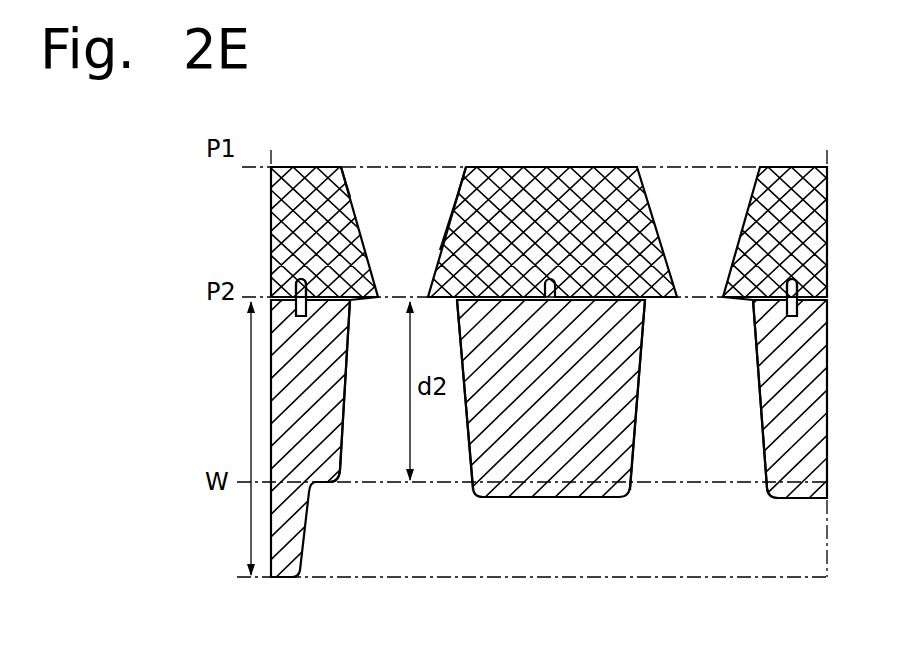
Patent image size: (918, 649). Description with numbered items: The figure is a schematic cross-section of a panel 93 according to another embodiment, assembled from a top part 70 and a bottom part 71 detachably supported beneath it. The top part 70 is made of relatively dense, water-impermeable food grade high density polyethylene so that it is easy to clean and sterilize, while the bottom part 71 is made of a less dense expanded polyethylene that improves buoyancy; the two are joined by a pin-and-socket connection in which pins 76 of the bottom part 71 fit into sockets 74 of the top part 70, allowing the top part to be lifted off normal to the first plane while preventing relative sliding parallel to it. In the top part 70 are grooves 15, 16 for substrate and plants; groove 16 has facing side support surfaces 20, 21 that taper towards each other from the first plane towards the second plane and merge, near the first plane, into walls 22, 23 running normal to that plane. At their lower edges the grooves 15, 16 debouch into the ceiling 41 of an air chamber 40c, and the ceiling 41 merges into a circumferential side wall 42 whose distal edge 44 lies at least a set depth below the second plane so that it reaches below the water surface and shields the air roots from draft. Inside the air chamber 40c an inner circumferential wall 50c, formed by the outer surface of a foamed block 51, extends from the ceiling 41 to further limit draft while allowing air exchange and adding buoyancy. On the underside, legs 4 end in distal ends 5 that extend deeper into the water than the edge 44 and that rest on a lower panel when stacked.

The legs 4 is at (280, 540).
The distal ends 5 is at (280, 580).
The groove 15 is at (698, 143).
The groove 16 is at (418, 143).
The side support surface 20 is at (392, 167).
The side support surface 21 is at (452, 218).
The wall 22 is at (370, 167).
The wall 23 is at (440, 167).
The air chamber 40c is at (410, 492).
The ceiling 41 is at (368, 302).
The circumferential side wall 42 is at (343, 437).
The distal edge 44 is at (330, 484).
The inner circumferential wall 50c is at (453, 487).
The foamed block 51 is at (572, 500).
The top part 70 is at (538, 188).
The bottom part 71 is at (500, 498).
The sockets 74 is at (300, 280).
The pins 76 is at (305, 318).
The panel 93 is at (622, 120).